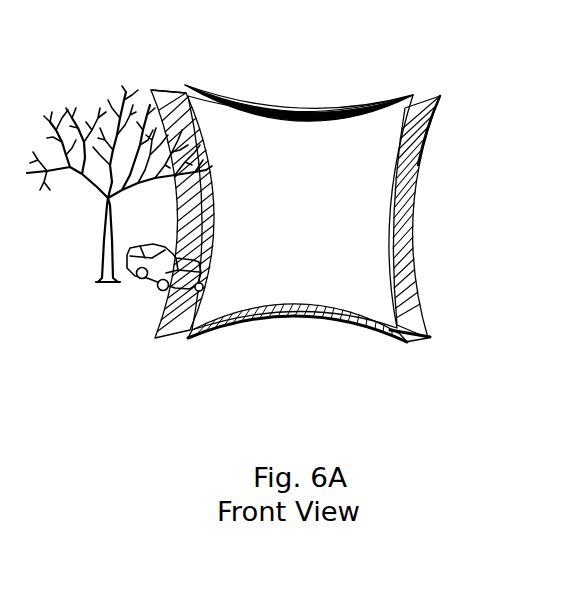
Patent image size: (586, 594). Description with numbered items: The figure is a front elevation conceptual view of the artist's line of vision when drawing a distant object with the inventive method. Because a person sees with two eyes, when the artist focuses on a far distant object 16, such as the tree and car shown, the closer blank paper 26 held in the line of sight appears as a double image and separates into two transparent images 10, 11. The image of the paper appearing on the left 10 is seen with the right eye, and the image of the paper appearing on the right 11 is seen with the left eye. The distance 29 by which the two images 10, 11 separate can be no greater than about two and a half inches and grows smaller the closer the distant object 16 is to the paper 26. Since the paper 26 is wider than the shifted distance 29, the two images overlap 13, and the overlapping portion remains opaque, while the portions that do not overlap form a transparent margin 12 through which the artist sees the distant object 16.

The image of the paper appearing on the left 10 is at (287, 219).
The image of the paper appearing on the right 11 is at (200, 340).
The transparent margin 12 is at (295, 214).
The overlap 13 is at (300, 212).
The far distant object 16 is at (119, 188).
The blank paper 26 is at (428, 339).
The distance 29 is at (183, 78).